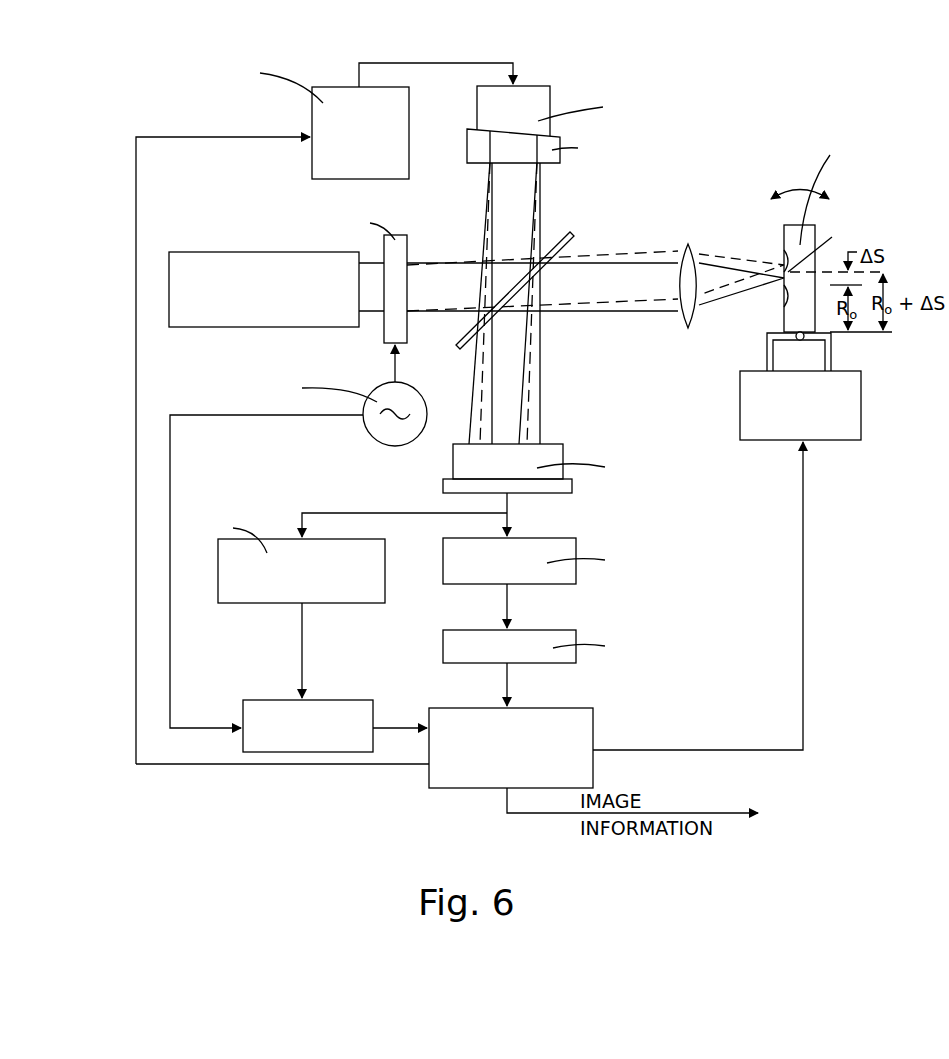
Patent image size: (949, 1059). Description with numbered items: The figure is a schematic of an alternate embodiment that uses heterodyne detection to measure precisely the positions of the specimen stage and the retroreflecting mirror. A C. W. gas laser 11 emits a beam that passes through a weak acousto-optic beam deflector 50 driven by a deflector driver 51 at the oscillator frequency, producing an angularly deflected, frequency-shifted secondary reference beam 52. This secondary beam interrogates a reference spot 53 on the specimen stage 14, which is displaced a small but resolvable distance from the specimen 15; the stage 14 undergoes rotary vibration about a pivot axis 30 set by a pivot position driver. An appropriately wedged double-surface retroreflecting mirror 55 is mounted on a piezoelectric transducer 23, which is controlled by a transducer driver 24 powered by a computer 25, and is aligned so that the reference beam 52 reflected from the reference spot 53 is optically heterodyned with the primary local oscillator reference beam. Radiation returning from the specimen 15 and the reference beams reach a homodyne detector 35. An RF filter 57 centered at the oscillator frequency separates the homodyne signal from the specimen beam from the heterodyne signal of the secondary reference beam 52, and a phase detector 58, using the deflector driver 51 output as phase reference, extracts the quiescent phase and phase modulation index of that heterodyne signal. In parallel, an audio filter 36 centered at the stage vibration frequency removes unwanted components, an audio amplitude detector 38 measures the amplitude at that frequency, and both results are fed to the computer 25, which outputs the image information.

The transducer driver 24 is at (373, 143).
The piezoelectric transducer 23 is at (516, 120).
The wedged retroreflecting mirror 55 is at (520, 162).
The acousto-optic beam deflector 50 is at (408, 255).
The C. W. gas laser 11 is at (258, 308).
The deflector driver 51 is at (397, 398).
The secondary reference beam 52 is at (617, 253).
The specimen stage 14 is at (777, 224).
The reference spot 53 is at (788, 258).
The specimen 15 is at (788, 303).
The pivot axis 30 is at (796, 338).
The homodyne detector 35 is at (520, 473).
The RF filter 57 is at (315, 585).
The phase detector 58 is at (267, 703).
The audio filter 36 is at (520, 570).
The audio amplitude detector 38 is at (520, 658).
The computer 25 is at (575, 723).